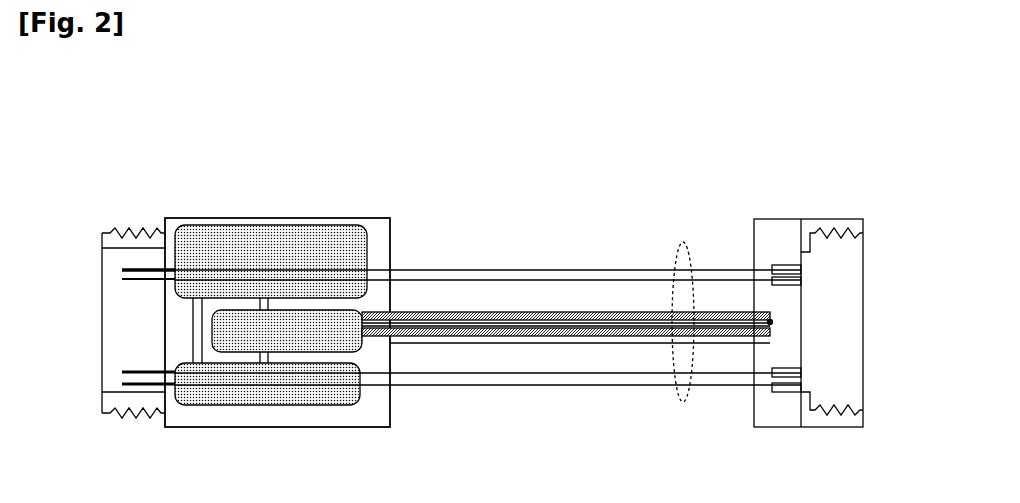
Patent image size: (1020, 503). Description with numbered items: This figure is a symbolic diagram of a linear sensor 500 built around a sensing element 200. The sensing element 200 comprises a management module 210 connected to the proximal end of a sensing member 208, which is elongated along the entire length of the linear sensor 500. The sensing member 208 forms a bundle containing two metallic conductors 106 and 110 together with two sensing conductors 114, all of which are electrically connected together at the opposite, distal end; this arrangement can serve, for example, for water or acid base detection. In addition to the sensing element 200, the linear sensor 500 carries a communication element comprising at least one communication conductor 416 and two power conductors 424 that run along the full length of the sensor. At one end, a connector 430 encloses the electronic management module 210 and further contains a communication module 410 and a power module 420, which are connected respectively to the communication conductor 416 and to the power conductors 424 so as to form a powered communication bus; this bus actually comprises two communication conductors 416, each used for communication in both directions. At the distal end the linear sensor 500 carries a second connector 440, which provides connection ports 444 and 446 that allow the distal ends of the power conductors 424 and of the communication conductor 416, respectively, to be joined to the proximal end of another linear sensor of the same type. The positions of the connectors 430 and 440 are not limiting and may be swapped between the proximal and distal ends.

The metallic conductor 106 is at (517, 342).
The metallic conductor 110 is at (460, 327).
The sensing conductors 114 is at (420, 315).
The sensing element 200 is at (567, 215).
The sensing member 208 is at (683, 403).
The management module 210 is at (313, 325).
The communication module 410 is at (233, 395).
The communication conductor 416 is at (535, 380).
The power module 420 is at (212, 237).
The power conductors 424 is at (633, 266).
The connector 430 is at (170, 220).
The connector 440 is at (772, 243).
The connection port 444 is at (807, 273).
The connection port 446 is at (814, 372).
The linear sensor 500 is at (256, 86).